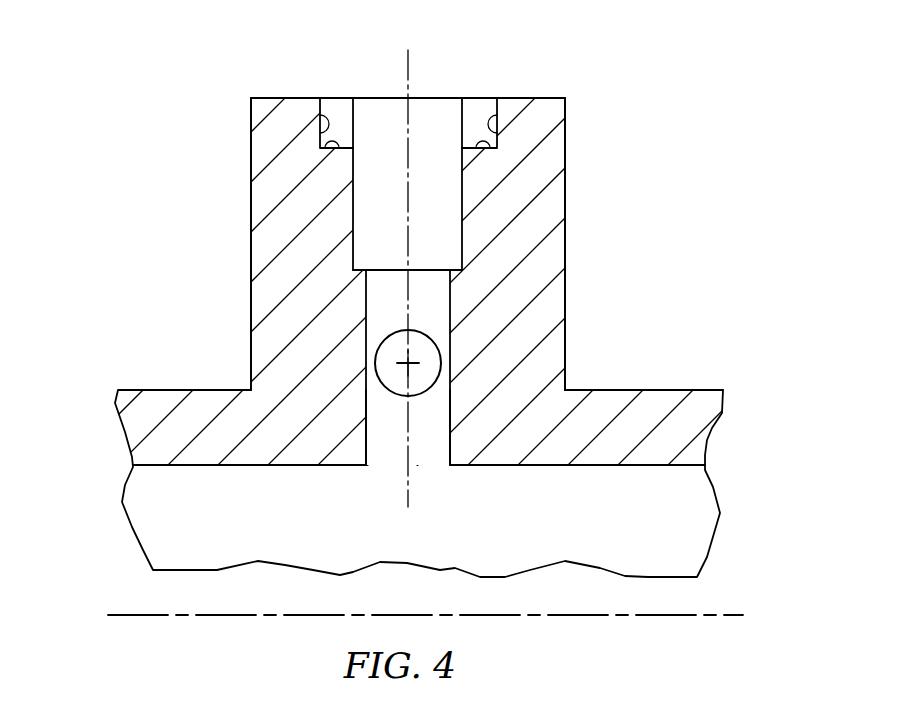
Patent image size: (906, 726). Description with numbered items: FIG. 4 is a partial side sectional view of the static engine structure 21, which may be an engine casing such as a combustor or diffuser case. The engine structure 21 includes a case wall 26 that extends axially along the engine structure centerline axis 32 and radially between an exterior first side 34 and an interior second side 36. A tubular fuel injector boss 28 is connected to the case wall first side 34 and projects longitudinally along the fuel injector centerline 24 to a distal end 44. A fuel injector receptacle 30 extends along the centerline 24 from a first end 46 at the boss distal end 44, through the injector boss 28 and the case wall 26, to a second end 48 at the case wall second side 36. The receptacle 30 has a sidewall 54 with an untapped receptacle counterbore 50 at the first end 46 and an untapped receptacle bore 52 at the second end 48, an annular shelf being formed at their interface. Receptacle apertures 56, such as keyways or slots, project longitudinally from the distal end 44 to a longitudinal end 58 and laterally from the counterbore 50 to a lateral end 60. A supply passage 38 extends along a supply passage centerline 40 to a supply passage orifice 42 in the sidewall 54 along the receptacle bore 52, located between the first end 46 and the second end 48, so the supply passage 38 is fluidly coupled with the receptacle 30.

The engine structure 21 is at (198, 80).
The longitudinal centerline 24 is at (410, 506).
The case wall 26 is at (105, 429).
The fuel injector boss 28 is at (226, 158).
The fuel injector receptacle 30 is at (432, 128).
The centerline axis 32 is at (740, 615).
The first side 34 is at (697, 388).
The second side 36 is at (688, 467).
The supply passage 38 is at (382, 373).
The supply passage centerline 40 is at (420, 363).
The supply passage orifice 42 is at (388, 337).
The distal end 44 is at (545, 98).
The first end 46 is at (383, 98).
The second end 48 is at (377, 467).
The receptacle counterbore 50 is at (421, 208).
The receptacle bore 52 is at (414, 309).
The sidewall 54 is at (548, 210).
The receptacle aperture 56 is at (342, 112).
The longitudinal end 58 is at (330, 150).
The lateral end 60 is at (320, 120).